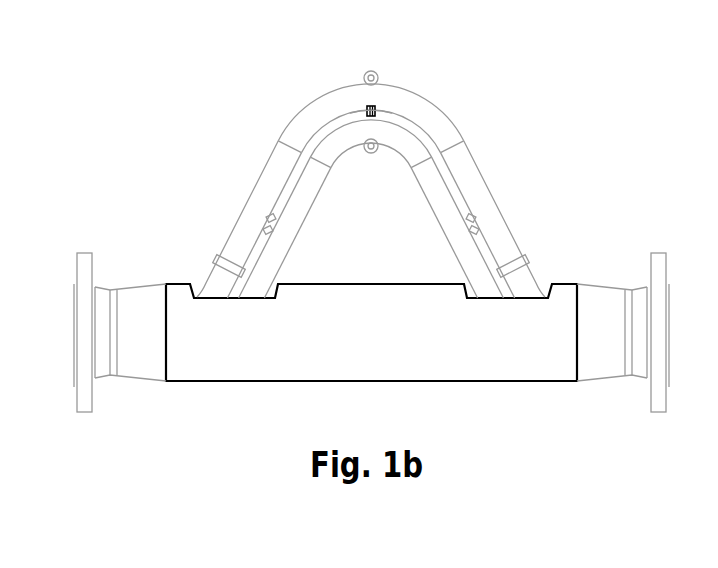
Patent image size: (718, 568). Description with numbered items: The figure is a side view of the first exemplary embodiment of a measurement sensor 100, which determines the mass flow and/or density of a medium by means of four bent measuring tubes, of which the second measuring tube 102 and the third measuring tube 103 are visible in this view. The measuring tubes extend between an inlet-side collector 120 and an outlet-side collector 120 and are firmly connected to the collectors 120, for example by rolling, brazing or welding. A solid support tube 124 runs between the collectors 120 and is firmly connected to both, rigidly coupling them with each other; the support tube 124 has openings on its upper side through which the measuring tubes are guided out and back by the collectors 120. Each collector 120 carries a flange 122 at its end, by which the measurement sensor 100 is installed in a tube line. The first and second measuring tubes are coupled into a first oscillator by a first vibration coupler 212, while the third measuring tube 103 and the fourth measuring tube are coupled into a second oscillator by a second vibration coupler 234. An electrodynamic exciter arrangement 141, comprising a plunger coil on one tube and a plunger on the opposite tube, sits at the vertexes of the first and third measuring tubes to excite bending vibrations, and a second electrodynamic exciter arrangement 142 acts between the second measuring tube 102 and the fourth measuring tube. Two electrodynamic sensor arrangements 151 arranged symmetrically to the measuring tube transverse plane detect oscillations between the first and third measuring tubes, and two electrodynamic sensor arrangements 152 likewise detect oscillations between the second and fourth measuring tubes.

The measurement sensor 100 is at (147, 48).
The second measuring tube 102 is at (447, 202).
The third measuring tube 103 is at (457, 158).
The collector 120 is at (146, 365).
The flange 122 is at (87, 262).
The support tube 124 is at (287, 365).
The electrodynamic exciter arrangement 141 is at (375, 77).
The second electrodynamic exciter arrangement 142 is at (371, 150).
The electrodynamic sensor arrangement 151 is at (268, 215).
The electrodynamic sensor arrangement 152 is at (268, 230).
The first vibration coupler 212 is at (367, 110).
The second vibration coupler 234 is at (376, 110).